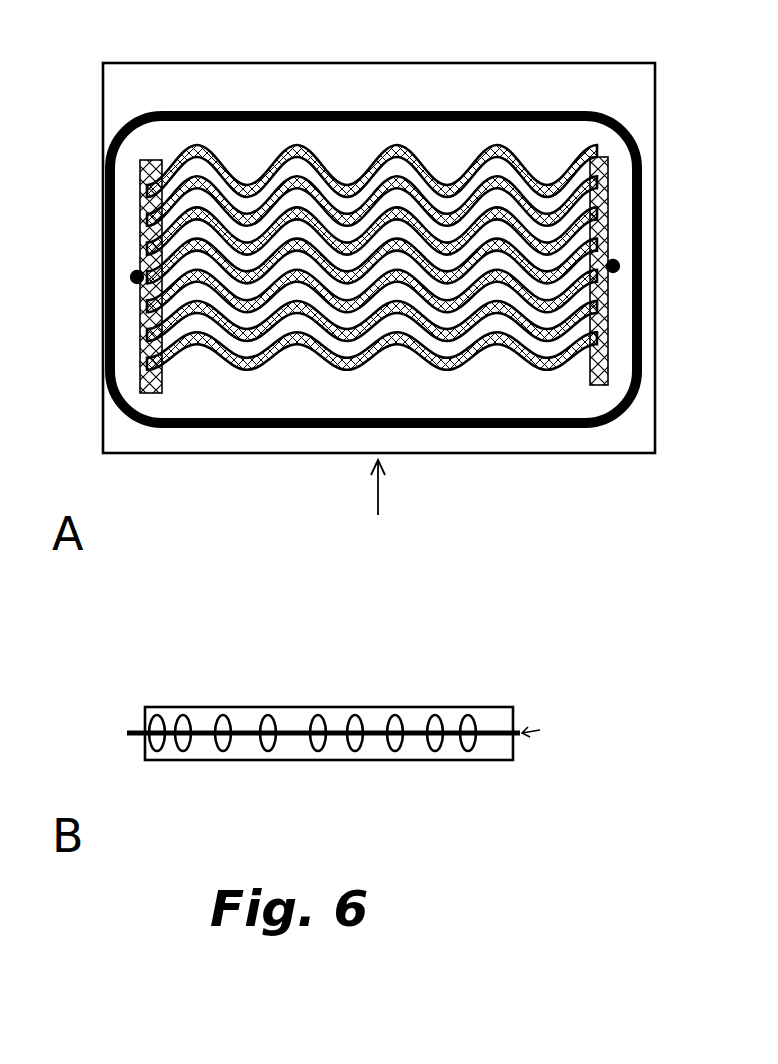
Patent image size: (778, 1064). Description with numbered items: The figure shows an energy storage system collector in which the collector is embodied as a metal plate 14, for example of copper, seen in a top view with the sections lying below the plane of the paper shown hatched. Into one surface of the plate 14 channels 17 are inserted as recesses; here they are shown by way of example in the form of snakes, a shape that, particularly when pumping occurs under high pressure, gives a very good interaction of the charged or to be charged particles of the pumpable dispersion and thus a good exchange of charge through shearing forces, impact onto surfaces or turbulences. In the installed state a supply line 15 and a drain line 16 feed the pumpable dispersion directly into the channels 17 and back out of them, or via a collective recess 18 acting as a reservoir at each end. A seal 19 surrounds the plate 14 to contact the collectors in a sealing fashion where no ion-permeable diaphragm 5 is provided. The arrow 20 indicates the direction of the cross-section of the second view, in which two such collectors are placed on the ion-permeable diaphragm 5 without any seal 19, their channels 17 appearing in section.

In FIG. 6B, the ion-permeable diaphragm 5 is at (539, 733).
In FIG. 6A, the plate for collector 14 is at (451, 63).
In FIG. 6B, the plate for collector 14 is at (343, 708).
In FIG. 6A, the supply line 15 is at (103, 287).
In FIG. 6A, the drain line 16 is at (613, 272).
In FIG. 6A, the channels 17 is at (246, 357).
In FIG. 6B, the channels 17 is at (183, 716).
In FIG. 6A, the collective recess 18 is at (599, 157).
In FIG. 6A, the seal 19 is at (291, 428).
In FIG. 6A, the line indicating cross-section in FIG. 6B 20 is at (379, 508).